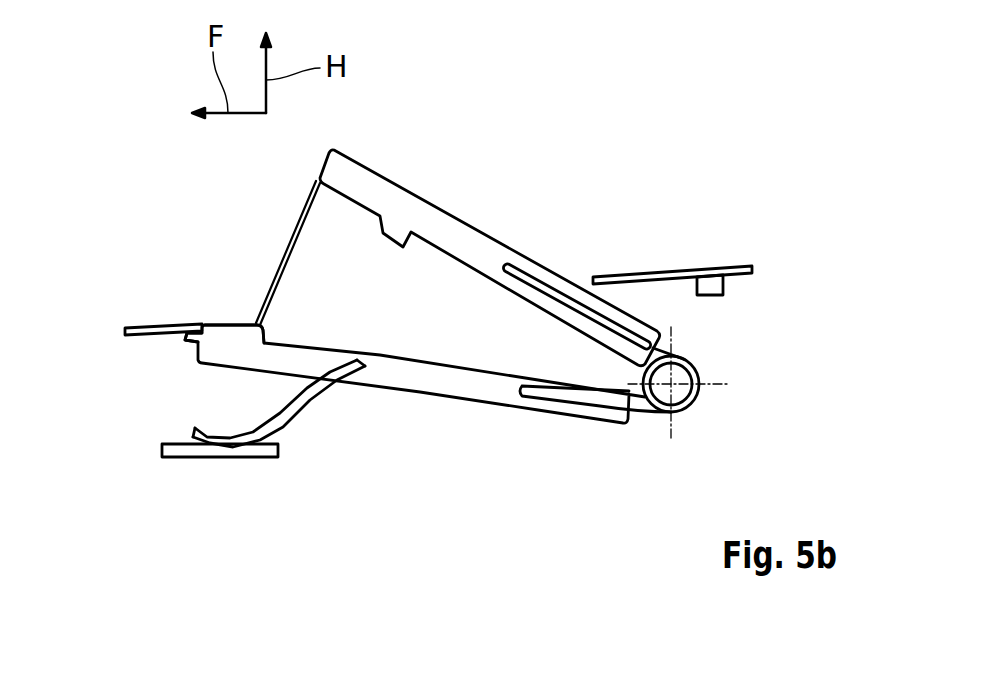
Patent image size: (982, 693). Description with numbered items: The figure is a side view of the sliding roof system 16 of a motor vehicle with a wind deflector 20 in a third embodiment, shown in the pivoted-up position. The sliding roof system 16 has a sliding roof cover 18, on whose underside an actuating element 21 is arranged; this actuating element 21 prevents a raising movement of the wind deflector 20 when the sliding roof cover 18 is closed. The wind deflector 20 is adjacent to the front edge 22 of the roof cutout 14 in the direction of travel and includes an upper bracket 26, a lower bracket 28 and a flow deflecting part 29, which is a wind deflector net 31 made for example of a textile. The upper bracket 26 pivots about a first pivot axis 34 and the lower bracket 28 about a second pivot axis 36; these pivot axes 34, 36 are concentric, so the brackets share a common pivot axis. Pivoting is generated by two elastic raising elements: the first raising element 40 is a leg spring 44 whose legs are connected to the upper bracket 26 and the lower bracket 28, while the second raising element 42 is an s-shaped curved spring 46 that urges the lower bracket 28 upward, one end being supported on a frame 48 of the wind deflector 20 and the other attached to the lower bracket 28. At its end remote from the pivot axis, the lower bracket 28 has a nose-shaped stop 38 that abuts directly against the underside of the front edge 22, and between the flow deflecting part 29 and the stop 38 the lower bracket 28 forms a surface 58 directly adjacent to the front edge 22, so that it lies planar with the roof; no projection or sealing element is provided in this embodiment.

The roof cutout 14 is at (148, 226).
The sliding roof system 16 is at (694, 143).
The sliding roof cover 18 is at (662, 278).
The wind deflector 20 is at (114, 465).
The actuating element 21 is at (713, 290).
The front edge 22 is at (162, 323).
The upper bracket 26 is at (455, 232).
The lower bracket 28 is at (468, 390).
The flow deflecting part 29 is at (239, 242).
The wind deflector net 31 is at (308, 205).
The first pivot axis 34 is at (731, 382).
The second pivot axis 36 is at (673, 390).
The stop 38 is at (183, 338).
The first raising element 40 is at (677, 359).
The spring 44 is at (692, 366).
The second raising element 42 is at (279, 446).
The s-shaped curved spring 46 is at (292, 398).
The frame 48 is at (197, 452).
The surface 58 is at (231, 312).